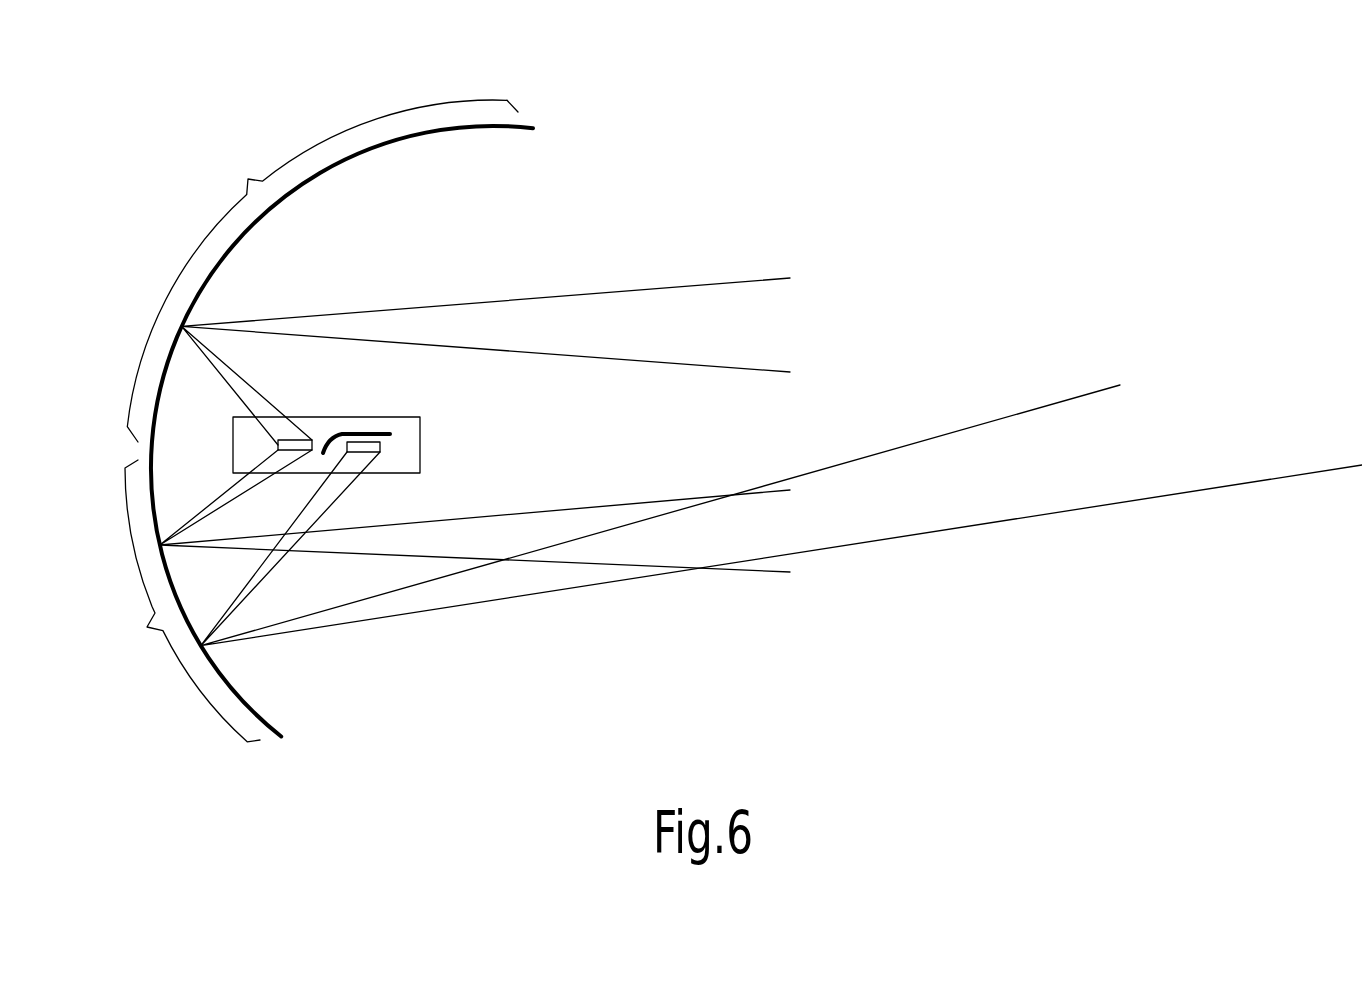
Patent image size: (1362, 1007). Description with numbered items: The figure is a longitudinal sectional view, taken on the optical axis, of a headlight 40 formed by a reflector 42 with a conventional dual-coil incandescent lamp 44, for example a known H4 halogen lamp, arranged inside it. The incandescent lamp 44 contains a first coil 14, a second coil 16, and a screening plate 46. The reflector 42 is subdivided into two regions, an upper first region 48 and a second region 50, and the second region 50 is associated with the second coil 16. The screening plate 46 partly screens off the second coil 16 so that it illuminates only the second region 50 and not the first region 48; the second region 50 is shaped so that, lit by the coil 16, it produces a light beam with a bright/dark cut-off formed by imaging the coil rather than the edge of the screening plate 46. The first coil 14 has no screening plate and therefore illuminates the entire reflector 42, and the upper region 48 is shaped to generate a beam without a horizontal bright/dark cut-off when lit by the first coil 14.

The headlight 40 is at (586, 157).
The reflector 42 is at (150, 452).
The incandescent lamp 44 is at (420, 447).
The first coil 14 is at (302, 440).
The second coil 16 is at (382, 447).
The screening plate 46 is at (368, 433).
The first region 48 is at (322, 271).
The second region 50 is at (188, 601).